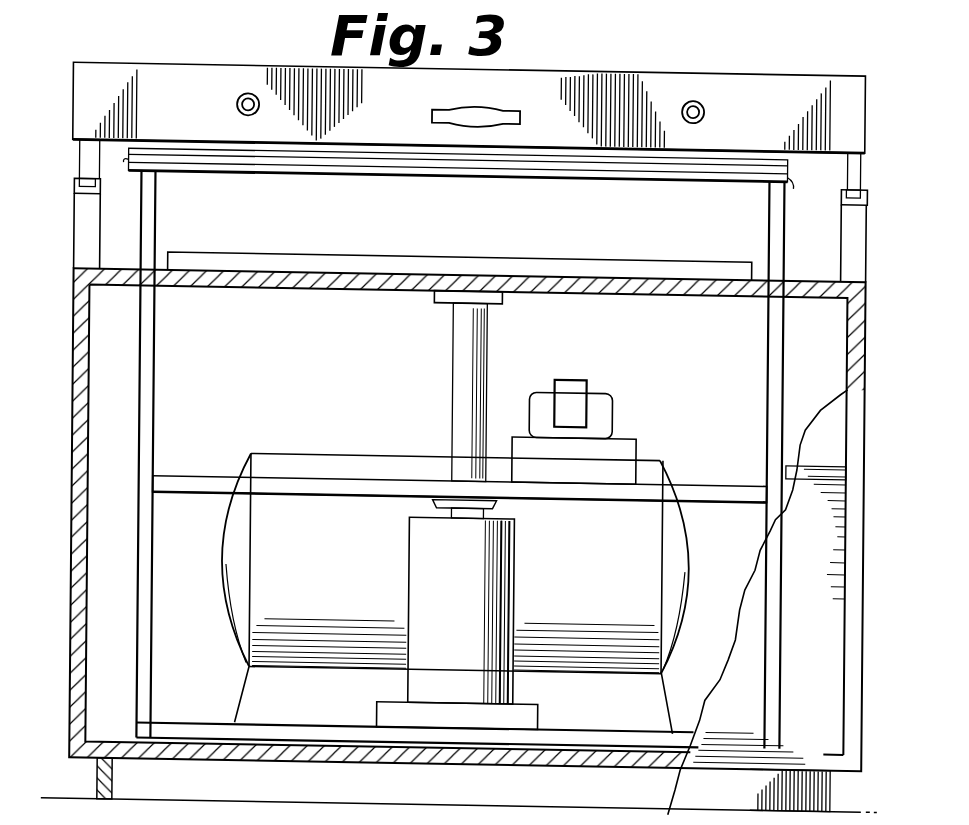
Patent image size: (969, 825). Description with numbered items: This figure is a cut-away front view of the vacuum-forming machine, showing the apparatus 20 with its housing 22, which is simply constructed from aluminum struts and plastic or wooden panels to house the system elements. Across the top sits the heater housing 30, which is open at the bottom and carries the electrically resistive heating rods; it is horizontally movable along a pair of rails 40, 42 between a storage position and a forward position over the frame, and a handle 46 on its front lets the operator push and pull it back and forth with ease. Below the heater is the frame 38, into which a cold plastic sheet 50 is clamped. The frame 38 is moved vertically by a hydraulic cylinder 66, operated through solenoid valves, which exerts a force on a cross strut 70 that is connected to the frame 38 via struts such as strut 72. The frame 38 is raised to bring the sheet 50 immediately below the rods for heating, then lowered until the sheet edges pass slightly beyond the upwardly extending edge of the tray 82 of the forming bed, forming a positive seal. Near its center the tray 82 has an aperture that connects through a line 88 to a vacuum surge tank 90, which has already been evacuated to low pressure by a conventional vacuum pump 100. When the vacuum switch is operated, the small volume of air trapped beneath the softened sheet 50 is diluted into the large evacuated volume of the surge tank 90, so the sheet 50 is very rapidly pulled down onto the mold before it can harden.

The apparatus 20 is at (792, 52).
The housing 22 is at (84, 560).
The heater housing 30 is at (199, 62).
The frame 38 is at (330, 179).
The rail 40 is at (856, 222).
The rail 42 is at (88, 212).
The handle 46 is at (479, 104).
The plastic sheet 50 is at (565, 167).
The hydraulic cylinder 66 is at (501, 578).
The cross strut 70 is at (283, 487).
The strut 72 is at (772, 372).
The tray 82 is at (492, 250).
The line 88 is at (478, 325).
The vacuum surge tank 90 is at (327, 468).
The vacuum pump 100 is at (596, 406).